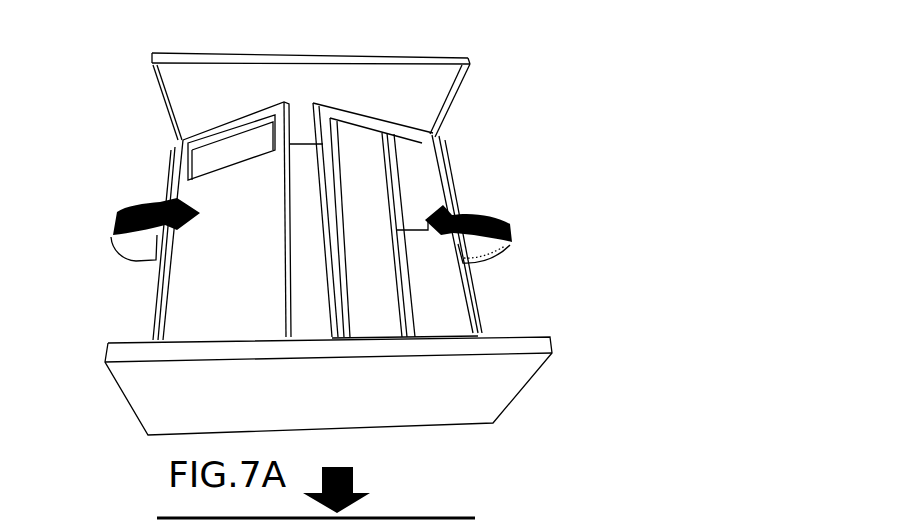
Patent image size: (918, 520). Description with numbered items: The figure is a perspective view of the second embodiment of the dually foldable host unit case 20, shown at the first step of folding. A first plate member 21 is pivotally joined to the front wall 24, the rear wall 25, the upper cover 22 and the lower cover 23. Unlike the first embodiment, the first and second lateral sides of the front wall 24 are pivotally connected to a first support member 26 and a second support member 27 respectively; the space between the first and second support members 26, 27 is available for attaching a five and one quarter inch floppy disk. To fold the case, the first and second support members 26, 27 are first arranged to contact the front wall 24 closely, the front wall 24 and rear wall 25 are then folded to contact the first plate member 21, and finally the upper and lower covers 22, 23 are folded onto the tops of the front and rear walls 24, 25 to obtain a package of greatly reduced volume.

The host unit case 20 is at (333, 33).
The first plate member 21 is at (308, 212).
The upper cover 22 is at (417, 88).
The lower cover 23 is at (508, 370).
The front wall 24 is at (457, 285).
The rear wall 25 is at (200, 297).
The first support member 26 is at (410, 213).
The second support member 27 is at (380, 323).